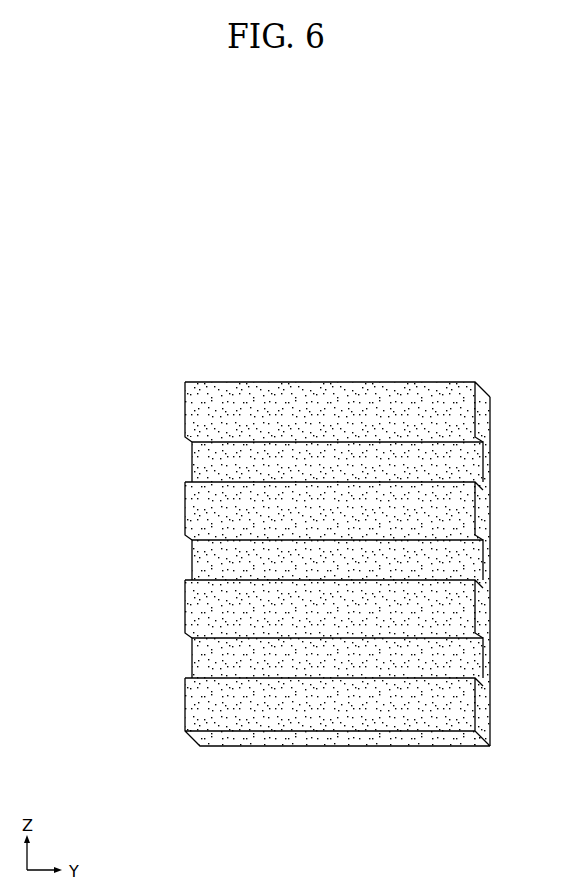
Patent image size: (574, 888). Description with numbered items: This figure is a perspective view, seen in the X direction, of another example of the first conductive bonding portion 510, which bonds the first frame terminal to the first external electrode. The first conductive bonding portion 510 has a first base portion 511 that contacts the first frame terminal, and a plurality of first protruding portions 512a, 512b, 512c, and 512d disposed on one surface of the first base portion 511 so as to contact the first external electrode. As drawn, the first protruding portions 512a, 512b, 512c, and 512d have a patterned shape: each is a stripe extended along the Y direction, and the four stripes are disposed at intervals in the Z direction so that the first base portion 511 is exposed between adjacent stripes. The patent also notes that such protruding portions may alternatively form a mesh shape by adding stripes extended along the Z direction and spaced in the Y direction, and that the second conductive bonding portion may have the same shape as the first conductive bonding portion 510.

The first conductive bonding portion 510 is at (93, 708).
The first base portion 511 is at (203, 560).
The first protruding portion 512a is at (203, 410).
The first protruding portion 512b is at (203, 508).
The first protruding portion 512c is at (203, 607).
The first protruding portion 512d is at (203, 702).